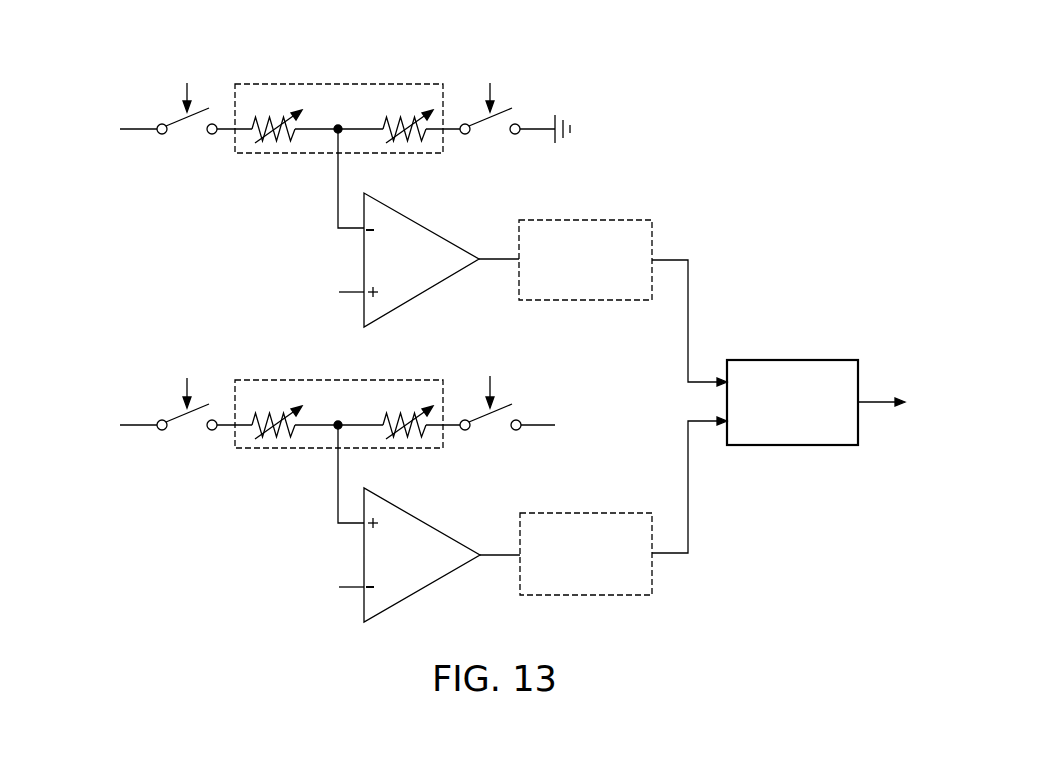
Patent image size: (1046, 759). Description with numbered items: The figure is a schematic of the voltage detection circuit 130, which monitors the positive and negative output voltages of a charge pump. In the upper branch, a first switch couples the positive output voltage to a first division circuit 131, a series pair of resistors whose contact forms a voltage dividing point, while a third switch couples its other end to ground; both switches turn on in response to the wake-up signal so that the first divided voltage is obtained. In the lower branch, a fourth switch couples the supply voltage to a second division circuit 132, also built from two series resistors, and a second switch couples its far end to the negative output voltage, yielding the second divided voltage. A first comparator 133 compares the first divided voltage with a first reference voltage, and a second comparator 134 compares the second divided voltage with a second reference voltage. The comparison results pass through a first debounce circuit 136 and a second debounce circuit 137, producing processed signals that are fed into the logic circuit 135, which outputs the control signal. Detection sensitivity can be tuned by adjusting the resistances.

The voltage detection circuit 130 is at (76, 94).
The first division circuit 131 is at (258, 84).
The second division circuit 132 is at (258, 380).
The first comparator 133 is at (402, 214).
The second comparator 134 is at (403, 508).
The logic circuit 135 is at (792, 360).
The first debounce circuit 136 is at (583, 219).
The second debounce circuit 137 is at (583, 512).